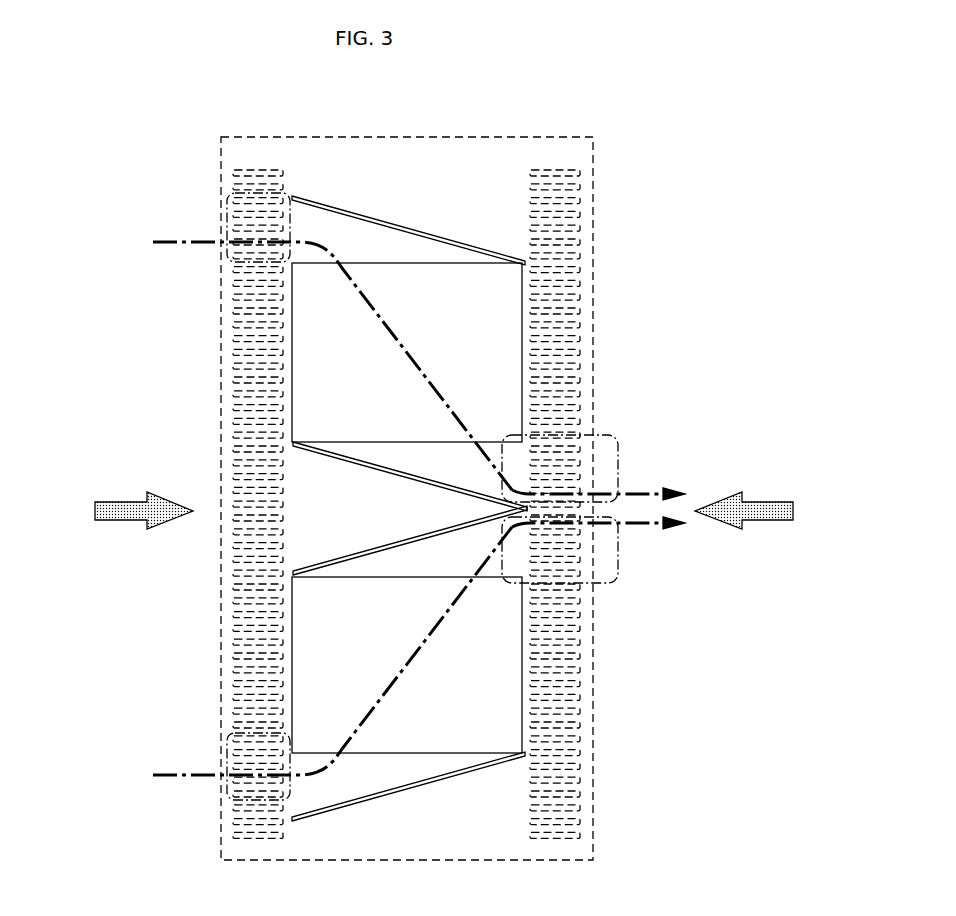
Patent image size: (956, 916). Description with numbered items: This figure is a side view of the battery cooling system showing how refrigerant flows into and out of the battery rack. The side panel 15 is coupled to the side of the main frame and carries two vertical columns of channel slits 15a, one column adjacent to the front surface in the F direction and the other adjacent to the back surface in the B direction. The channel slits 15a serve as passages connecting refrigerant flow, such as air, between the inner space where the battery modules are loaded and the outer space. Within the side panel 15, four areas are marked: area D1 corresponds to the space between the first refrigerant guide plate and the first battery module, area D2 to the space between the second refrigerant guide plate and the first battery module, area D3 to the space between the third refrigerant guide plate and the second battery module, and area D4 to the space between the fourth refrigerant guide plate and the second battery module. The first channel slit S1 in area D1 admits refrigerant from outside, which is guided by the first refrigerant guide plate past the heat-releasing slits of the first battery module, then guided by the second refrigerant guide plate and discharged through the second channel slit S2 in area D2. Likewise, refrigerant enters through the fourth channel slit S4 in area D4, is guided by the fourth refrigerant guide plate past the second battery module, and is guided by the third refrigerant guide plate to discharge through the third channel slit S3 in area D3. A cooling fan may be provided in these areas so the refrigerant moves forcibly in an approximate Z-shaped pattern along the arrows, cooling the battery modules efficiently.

The side panel 15 is at (446, 147).
The channel slit 15a is at (257, 172).
The area D1 is at (228, 207).
The area D2 is at (618, 450).
The area D3 is at (618, 568).
The area D4 is at (228, 789).
The first channel slit S1 is at (240, 227).
The second channel slit S2 is at (565, 456).
The third channel slit S3 is at (565, 562).
The fourth channel slit S4 is at (240, 752).
The front surface direction F is at (129, 510).
The back surface direction B is at (758, 510).